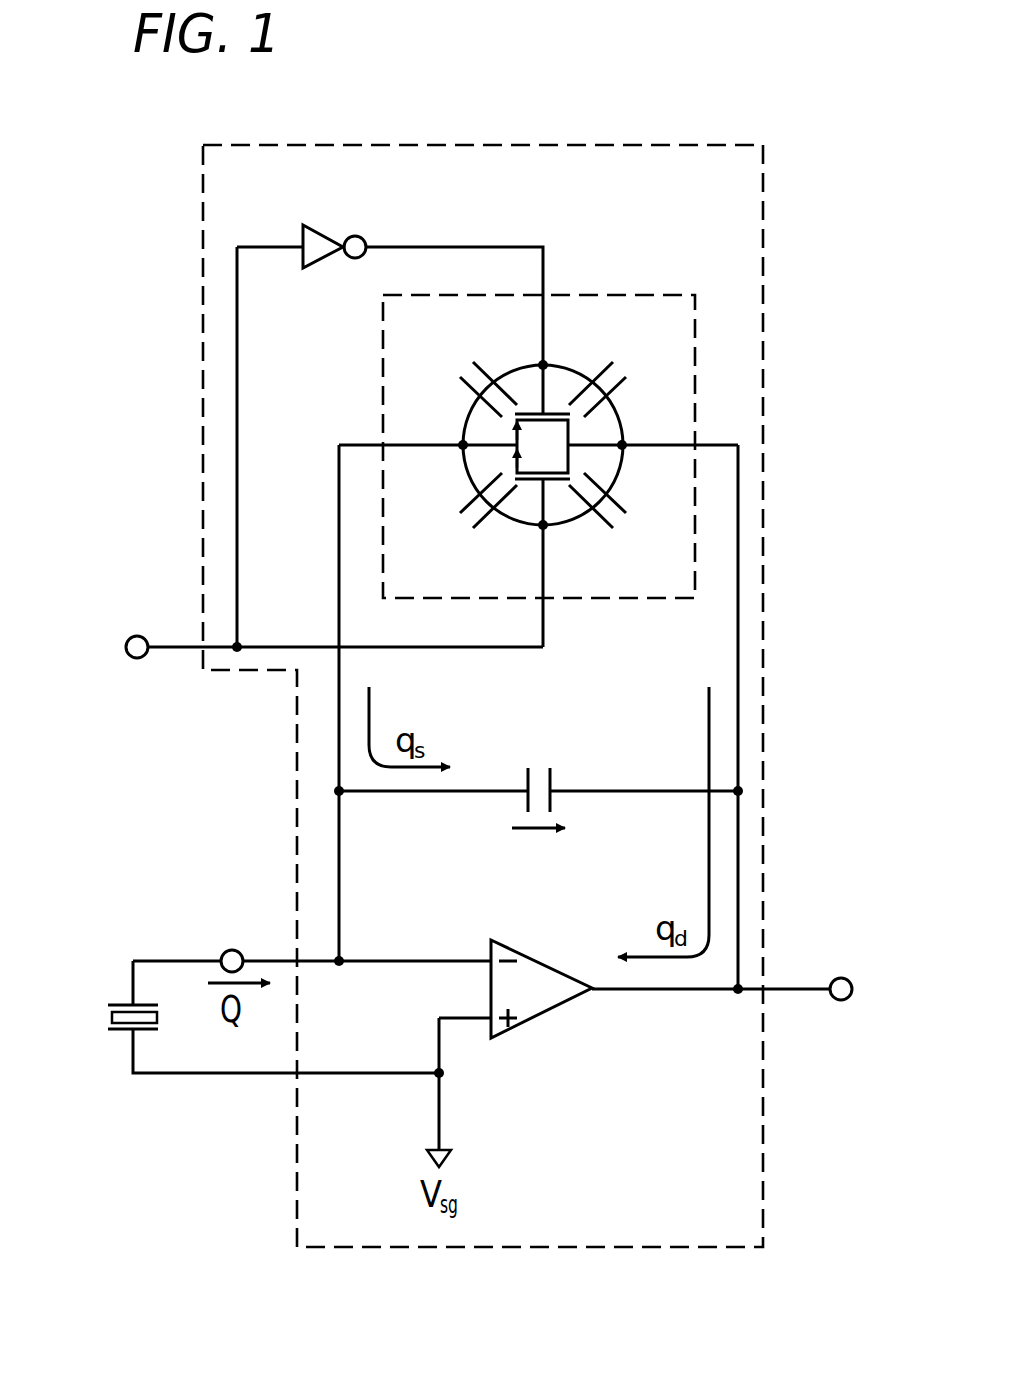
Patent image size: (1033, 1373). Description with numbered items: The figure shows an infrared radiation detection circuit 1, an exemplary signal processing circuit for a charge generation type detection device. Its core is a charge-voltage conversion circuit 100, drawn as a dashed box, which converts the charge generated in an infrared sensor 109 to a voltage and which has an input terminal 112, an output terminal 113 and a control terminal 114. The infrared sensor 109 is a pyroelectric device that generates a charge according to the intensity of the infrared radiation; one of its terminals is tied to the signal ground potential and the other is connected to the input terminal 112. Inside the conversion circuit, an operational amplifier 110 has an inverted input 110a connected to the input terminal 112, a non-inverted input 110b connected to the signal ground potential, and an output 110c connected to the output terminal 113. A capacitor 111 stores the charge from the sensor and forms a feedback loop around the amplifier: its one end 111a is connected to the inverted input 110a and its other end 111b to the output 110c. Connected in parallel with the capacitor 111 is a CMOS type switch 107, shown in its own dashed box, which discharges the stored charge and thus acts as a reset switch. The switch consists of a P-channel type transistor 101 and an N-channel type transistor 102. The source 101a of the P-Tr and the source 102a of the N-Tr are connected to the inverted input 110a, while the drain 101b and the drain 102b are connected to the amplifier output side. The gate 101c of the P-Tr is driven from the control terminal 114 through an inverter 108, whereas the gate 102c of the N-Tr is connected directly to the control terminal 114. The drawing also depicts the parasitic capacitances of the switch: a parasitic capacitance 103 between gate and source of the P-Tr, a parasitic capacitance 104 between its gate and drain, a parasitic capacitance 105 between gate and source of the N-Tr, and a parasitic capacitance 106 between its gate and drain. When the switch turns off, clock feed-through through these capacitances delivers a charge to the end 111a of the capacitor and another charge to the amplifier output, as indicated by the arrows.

The infrared radiation detection circuit 1 is at (374, 1300).
The charge-voltage conversion circuit 100 is at (385, 145).
The P-channel type transistor 101 is at (550, 412).
The source of the P-channel type transistor 101a is at (427, 445).
The drain of the P-channel type transistor 101b is at (665, 445).
The gate of the P-channel type transistor 101c is at (547, 320).
The N-channel type transistor 102 is at (548, 484).
The source of the N-channel type transistor 102a is at (400, 448).
The drain of the N-channel type transistor 102b is at (680, 448).
The gate of the N-channel type transistor 102c is at (550, 600).
The parasitic capacitance between the gate and the source of the P-Tr 103 is at (462, 377).
The parasitic capacitance between the gate and the drain of the P-Tr 104 is at (624, 378).
The parasitic capacitance between the gate and the source of the N-Tr 105 is at (462, 515).
The parasitic capacitance between the gate and the drain of the N-Tr 106 is at (626, 515).
The CMOS type switch 107 is at (665, 295).
The inverter 108 is at (335, 230).
The infrared sensor 109 is at (108, 1015).
The operational amplifier 110 is at (601, 999).
The inverted input of the operational amplifier 110a is at (490, 958).
The non-inverted input of the operational amplifier 110b is at (485, 1022).
The output of the operational amplifier 110c is at (593, 992).
The capacitor 111 is at (538, 786).
The one end of the capacitor 111a is at (522, 796).
The other end of the capacitor 111b is at (557, 796).
The input terminal 112 is at (222, 952).
The output terminal 113 is at (840, 976).
The control terminal 114 is at (137, 635).